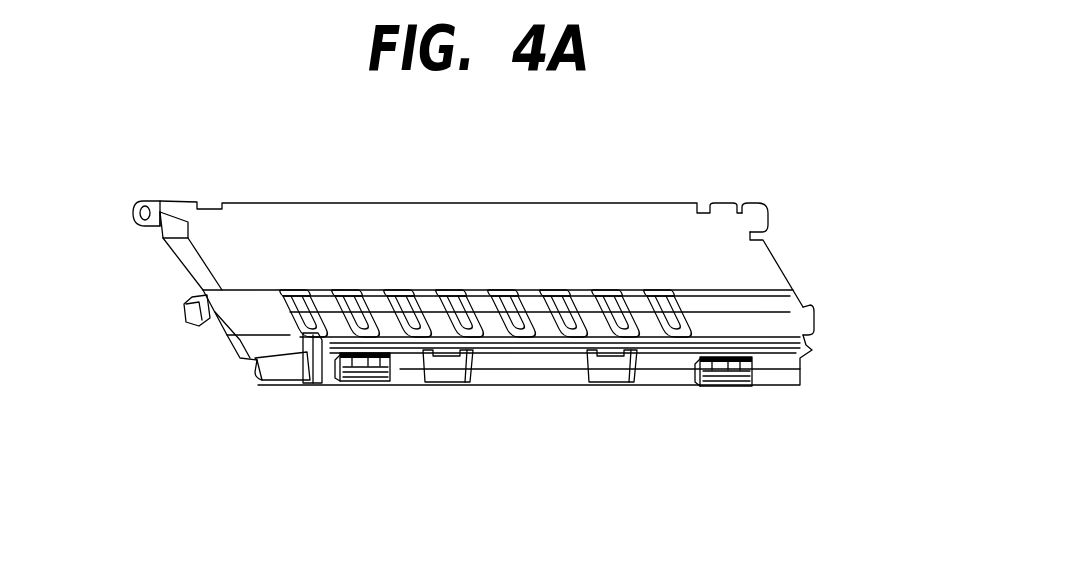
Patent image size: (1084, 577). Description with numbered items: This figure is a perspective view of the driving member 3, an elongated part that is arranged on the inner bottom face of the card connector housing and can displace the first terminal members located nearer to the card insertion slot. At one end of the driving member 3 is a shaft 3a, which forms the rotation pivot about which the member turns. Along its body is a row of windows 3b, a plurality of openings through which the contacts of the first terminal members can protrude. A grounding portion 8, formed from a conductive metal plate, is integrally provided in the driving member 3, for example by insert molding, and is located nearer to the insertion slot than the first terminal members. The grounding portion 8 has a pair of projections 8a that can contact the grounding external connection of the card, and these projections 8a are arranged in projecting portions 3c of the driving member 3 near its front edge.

The driving member 3 is at (518, 203).
The shaft 3a is at (763, 217).
The windows 3b is at (368, 320).
The projecting portions 3c is at (353, 385).
The grounding portion 8 is at (493, 350).
The projections 8a is at (370, 387).